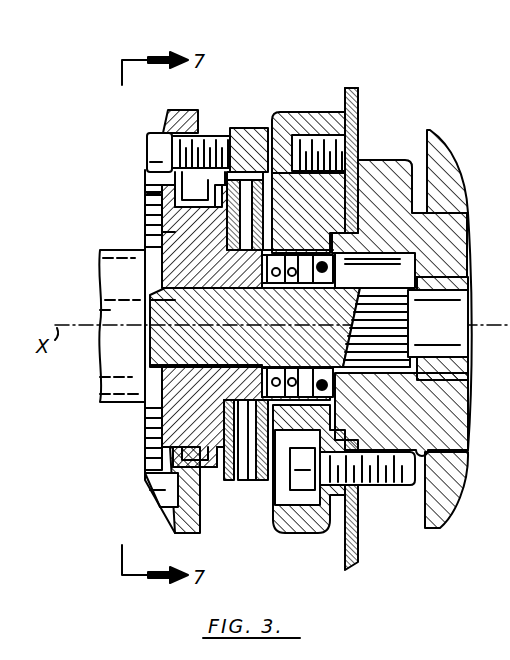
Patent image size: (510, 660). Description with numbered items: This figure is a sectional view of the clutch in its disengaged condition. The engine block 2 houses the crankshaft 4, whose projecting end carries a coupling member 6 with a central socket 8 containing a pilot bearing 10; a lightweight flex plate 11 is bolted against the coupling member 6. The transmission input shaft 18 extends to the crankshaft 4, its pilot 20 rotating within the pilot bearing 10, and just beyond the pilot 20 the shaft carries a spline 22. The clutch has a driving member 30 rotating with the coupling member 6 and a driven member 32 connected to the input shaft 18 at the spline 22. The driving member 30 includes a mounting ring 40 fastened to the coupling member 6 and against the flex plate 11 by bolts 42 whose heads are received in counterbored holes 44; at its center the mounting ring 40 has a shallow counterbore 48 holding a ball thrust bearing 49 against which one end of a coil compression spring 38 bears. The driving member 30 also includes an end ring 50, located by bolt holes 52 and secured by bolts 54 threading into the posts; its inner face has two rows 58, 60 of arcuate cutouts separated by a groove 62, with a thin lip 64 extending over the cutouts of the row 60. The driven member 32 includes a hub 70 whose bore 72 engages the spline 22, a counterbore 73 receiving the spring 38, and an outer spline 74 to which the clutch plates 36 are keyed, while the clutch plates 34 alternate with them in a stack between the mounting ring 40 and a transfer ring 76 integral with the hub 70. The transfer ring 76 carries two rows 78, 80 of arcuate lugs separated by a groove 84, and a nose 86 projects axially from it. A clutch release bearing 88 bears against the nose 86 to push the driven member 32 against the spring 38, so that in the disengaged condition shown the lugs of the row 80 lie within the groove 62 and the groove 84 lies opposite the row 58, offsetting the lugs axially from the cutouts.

The block 2 is at (440, 165).
The crankshaft 4 is at (460, 415).
The coupling member 6 is at (388, 165).
The socket 8 is at (465, 290).
The pilot bearing 10 is at (455, 375).
The flex plate 11 is at (352, 88).
The input shaft 18 is at (150, 340).
The pilot 20 is at (462, 330).
The spline 22 is at (400, 285).
The driving member 30 is at (288, 545).
The driven member 32 is at (173, 427).
The clutch plates 34 is at (243, 130).
The clutch plates 36 is at (250, 482).
The compression spring 38 is at (300, 262).
The mounting ring 40 is at (290, 115).
The bolts 42 is at (386, 486).
The holes 44 is at (356, 135).
The counterbore 48 is at (334, 362).
The ball thrust bearing 49 is at (340, 393).
The end ring 50 is at (140, 502).
The bolt holes 52 is at (181, 128).
The bolts 54 is at (148, 150).
The row 58 is at (185, 512).
The row 60 is at (152, 222).
The groove 62 is at (145, 477).
The lip 64 is at (145, 192).
The hub 70 is at (208, 273).
The bore 72 is at (150, 365).
The counterbore 73 is at (295, 285).
The spline 74 is at (160, 310).
The transfer ring 76 is at (173, 233).
The row 78 is at (220, 137).
The row 80 is at (147, 193).
The groove 84 is at (182, 200).
The nose 86 is at (147, 410).
The clutch release bearing 88 is at (105, 310).